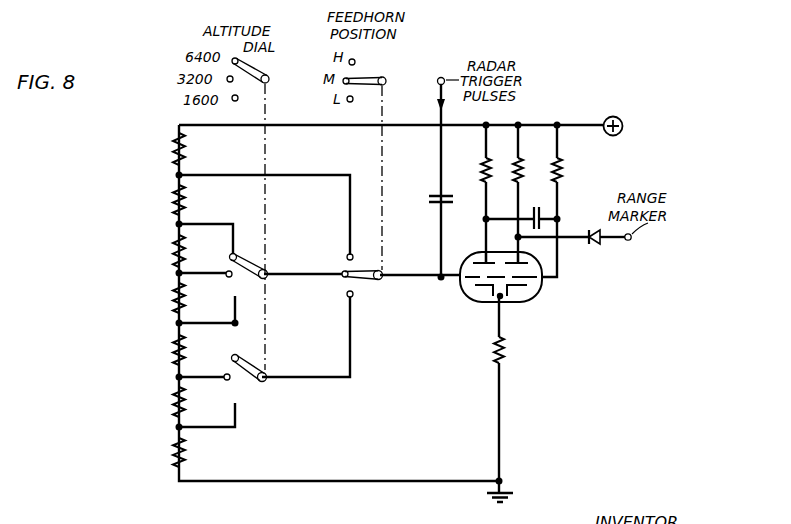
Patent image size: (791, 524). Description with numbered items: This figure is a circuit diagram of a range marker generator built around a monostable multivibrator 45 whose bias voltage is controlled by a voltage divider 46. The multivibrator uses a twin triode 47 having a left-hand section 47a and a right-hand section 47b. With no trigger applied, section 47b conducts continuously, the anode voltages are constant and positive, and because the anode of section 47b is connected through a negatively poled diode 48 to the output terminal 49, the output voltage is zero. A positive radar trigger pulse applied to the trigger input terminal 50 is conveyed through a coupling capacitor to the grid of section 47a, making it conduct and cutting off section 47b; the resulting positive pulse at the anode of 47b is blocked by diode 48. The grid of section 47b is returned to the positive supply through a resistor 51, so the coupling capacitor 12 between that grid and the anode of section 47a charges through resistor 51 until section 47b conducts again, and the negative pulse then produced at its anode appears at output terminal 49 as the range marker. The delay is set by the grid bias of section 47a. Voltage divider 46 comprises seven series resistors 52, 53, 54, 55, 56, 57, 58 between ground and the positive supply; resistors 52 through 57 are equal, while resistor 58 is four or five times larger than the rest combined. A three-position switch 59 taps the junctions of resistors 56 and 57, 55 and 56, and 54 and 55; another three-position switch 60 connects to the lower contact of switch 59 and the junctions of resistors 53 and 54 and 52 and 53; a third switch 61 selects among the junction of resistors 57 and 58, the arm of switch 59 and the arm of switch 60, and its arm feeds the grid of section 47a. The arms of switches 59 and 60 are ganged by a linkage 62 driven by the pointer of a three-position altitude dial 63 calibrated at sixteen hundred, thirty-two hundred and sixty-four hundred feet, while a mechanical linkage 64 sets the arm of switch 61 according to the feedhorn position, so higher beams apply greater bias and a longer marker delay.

The coupling capacitor 12 is at (536, 207).
The monostable multivibrator 45 is at (475, 328).
The voltage divider 46 is at (149, 284).
The twin triode 47 is at (523, 273).
The left-hand section of twin triode 47a is at (472, 255).
The right-hand section of twin triode 47b is at (543, 261).
The negatively poled diode 48 is at (592, 228).
The output terminal 49 is at (630, 241).
The trigger input terminal 50 is at (442, 77).
The resistor 51 is at (569, 166).
The resistor 52 is at (187, 453).
The resistor 53 is at (187, 401).
The resistor 54 is at (187, 350).
The resistor 55 is at (187, 296).
The resistor 56 is at (187, 251).
The resistor 57 is at (188, 197).
The resistor 58 is at (187, 149).
The three-position switch 59 is at (259, 303).
The three-position switch 60 is at (267, 411).
The three-position switch 61 is at (380, 307).
The linkage 62 is at (268, 214).
The altitude dial 63 is at (293, 89).
The mechanical linkage 64 is at (385, 166).